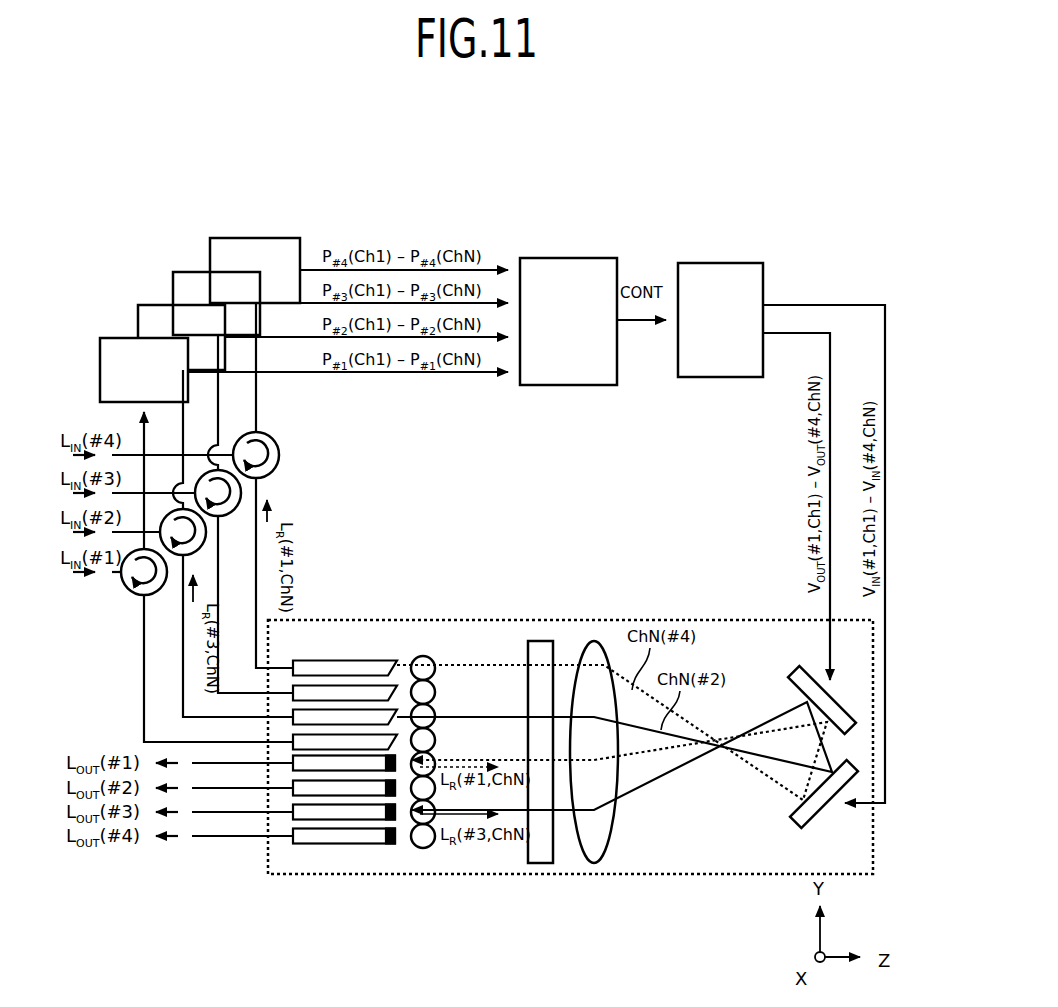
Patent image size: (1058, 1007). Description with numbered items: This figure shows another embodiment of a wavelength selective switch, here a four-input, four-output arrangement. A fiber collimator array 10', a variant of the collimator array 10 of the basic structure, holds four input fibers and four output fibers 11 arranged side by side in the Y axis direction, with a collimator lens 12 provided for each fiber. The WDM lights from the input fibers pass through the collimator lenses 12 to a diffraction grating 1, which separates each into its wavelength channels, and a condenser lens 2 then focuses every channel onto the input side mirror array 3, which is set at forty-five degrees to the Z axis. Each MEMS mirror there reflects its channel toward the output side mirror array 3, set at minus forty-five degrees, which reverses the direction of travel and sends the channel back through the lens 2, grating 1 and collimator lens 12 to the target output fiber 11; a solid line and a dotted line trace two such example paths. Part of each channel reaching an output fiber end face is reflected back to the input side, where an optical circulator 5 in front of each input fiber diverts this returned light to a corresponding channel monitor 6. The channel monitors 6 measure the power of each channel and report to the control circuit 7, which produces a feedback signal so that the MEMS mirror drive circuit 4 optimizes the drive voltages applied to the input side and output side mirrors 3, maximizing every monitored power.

The diffraction grating 1 is at (537, 641).
The condenser lens 2 is at (596, 641).
The mirror array 3 is at (795, 670).
The MEMS mirror drive circuit 4 is at (692, 263).
The optical circulator 5 is at (123, 614).
The channel monitor 6 is at (232, 238).
The control circuit 7 is at (540, 258).
The input/output optical system 10 is at (368, 953).
The fiber collimator array 10' is at (368, 953).
The input and output fibers 11 is at (328, 848).
The collimator lens 12 is at (423, 848).